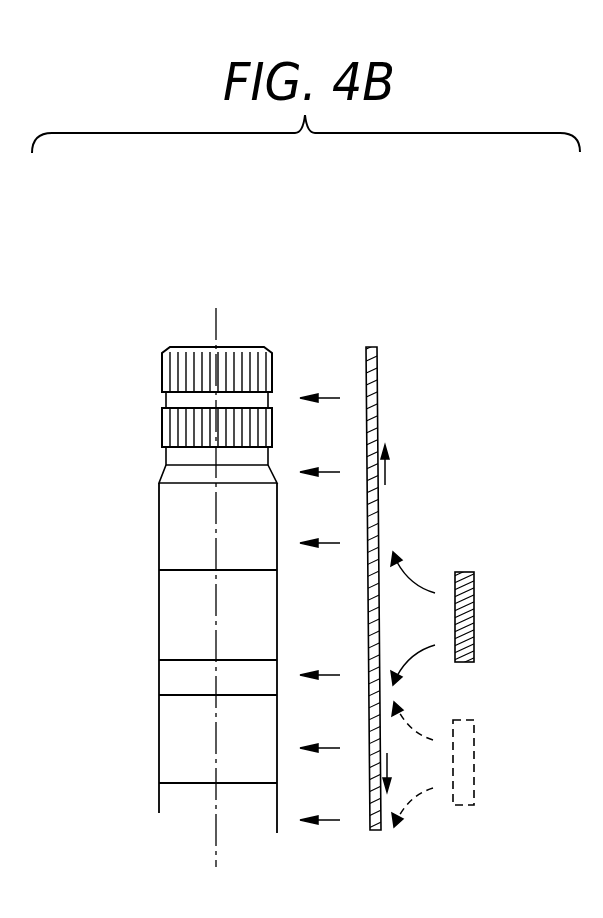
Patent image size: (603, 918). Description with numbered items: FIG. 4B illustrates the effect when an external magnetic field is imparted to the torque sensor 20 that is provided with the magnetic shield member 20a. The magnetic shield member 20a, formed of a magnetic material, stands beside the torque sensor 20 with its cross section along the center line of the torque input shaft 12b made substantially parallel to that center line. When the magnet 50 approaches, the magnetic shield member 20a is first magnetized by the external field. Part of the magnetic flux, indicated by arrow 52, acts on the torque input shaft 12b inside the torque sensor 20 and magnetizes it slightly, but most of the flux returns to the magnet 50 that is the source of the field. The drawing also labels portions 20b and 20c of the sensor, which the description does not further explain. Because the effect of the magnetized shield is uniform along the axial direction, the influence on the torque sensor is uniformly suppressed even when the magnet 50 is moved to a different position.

The torque sensor 20 is at (472, 526).
The magnetic shield member 20a is at (377, 387).
The container body section 20b is at (172, 627).
The container lower section 20c is at (177, 763).
The torque input shaft 12b is at (268, 400).
The magnetic flux 52 is at (330, 392).
The magnet 50 is at (509, 615).